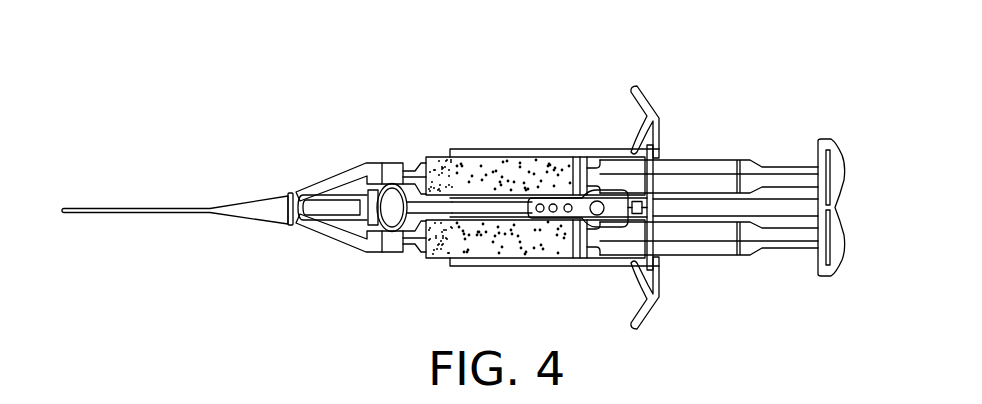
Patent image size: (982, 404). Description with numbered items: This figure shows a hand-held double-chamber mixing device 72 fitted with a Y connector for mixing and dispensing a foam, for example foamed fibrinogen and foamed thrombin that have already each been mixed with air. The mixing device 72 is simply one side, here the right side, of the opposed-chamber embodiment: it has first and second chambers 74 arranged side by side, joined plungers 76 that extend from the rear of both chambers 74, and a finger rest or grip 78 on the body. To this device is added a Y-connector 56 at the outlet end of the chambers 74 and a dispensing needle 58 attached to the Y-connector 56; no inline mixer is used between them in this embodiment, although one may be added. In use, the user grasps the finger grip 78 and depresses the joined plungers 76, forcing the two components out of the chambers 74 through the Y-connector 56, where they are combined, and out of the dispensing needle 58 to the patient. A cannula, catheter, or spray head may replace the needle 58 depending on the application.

The mixing device 72 is at (815, 89).
The first and second chambers 74 is at (516, 145).
The joined plungers 76 is at (838, 259).
The finger rest or grip 78 is at (651, 102).
The Y-connector 56 is at (343, 171).
The dispensing needle 58 is at (140, 206).